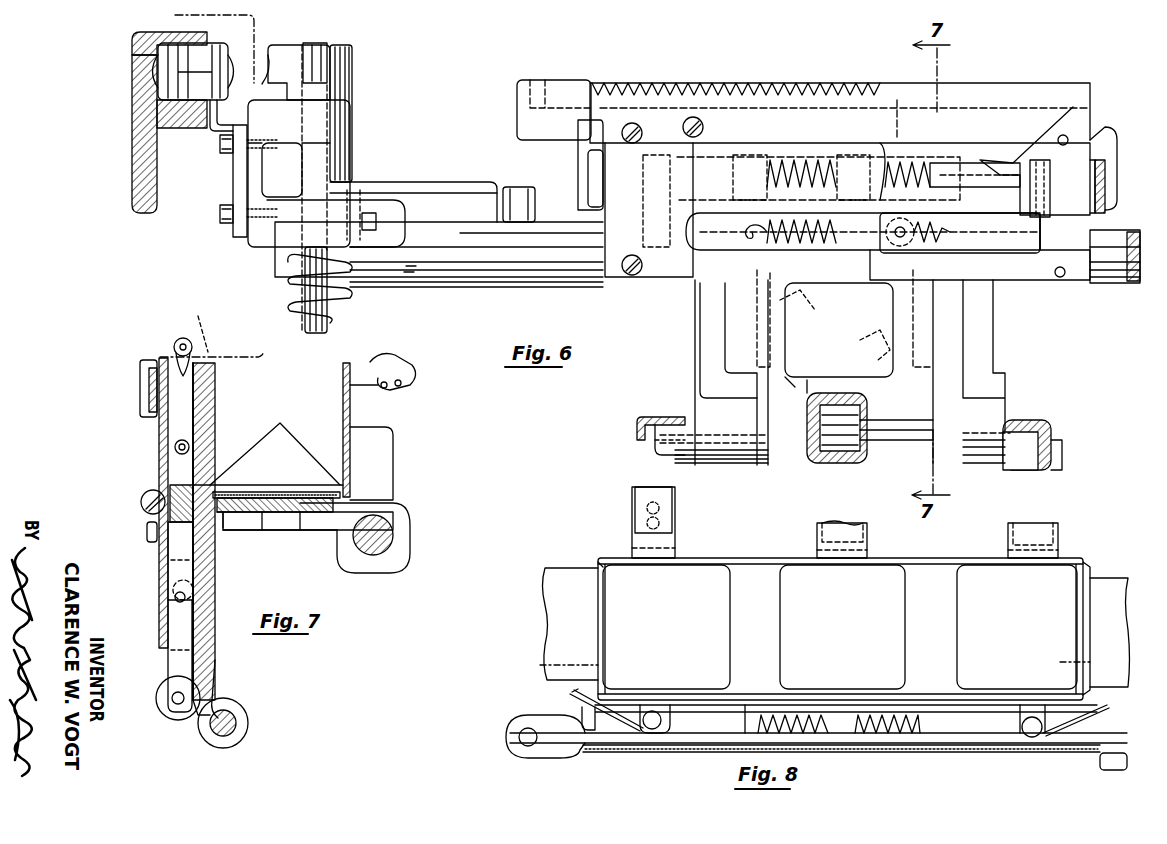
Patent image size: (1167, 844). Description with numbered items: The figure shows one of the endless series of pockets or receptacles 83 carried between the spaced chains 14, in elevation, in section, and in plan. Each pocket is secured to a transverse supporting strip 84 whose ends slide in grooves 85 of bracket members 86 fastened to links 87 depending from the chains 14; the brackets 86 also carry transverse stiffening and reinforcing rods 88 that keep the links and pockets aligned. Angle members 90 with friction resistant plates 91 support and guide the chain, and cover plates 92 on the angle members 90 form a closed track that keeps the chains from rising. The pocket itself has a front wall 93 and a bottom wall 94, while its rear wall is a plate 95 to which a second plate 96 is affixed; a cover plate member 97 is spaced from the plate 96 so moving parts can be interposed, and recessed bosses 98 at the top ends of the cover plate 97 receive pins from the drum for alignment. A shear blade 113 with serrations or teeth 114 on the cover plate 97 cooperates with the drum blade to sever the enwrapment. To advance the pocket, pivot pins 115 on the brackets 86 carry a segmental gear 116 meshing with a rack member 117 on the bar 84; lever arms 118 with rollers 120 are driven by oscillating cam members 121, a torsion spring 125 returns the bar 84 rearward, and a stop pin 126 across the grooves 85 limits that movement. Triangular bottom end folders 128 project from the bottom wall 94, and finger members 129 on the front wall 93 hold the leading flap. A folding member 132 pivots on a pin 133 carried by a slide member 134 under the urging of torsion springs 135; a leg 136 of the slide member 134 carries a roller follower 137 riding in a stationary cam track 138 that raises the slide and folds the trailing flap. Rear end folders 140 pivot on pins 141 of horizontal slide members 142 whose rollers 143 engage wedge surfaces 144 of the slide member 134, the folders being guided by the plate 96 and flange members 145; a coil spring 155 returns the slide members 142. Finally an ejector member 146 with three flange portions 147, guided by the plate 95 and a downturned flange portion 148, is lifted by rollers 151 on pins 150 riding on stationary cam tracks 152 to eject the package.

In FIG. 6, the chains 14 is at (182, 45).
In FIG. 7, the pockets or receptacles 83 is at (316, 385).
In FIG. 8, the pockets or receptacles 83 is at (730, 606).
In FIG. 6, the transverse supporting strips 84 is at (468, 200).
In FIG. 7, the transverse supporting strips 84 is at (297, 532).
In FIG. 8, the transverse supporting strips 84 is at (563, 617).
In FIG. 6, the grooves 85 is at (338, 252).
In FIG. 7, the grooves 85 is at (395, 505).
In FIG. 6, the bracket members 86 is at (345, 115).
In FIG. 7, the bracket members 86 is at (385, 455).
In FIG. 6, the links 87 is at (230, 182).
In FIG. 6, the transverse stiffening and reinforcing rods 88 is at (576, 270).
In FIG. 7, the transverse stiffening and reinforcing rods 88 is at (388, 552).
In FIG. 6, the angle members 90 is at (130, 167).
In FIG. 6, the friction resistant plates 91 is at (133, 105).
In FIG. 6, the cover plates 92 is at (132, 38).
In FIG. 7, the front wall 93 is at (352, 420).
In FIG. 8, the front wall 93 is at (712, 562).
In FIG. 7, the bottom wall 94 is at (262, 532).
In FIG. 8, the bottom wall 94 is at (768, 590).
In FIG. 7, the plate 95 is at (216, 412).
In FIG. 8, the plate 95 is at (810, 700).
In FIG. 6, the second plate 96 is at (1076, 100).
In FIG. 7, the second plate 96 is at (216, 378).
In FIG. 8, the second plate 96 is at (865, 700).
In FIG. 6, the cover plate member 97 is at (710, 150).
In FIG. 7, the cover plate member 97 is at (173, 352).
In FIG. 8, the cover plate member 97 is at (663, 745).
In FIG. 6, the recessed bosses 98 is at (518, 88).
In FIG. 7, the recessed bosses 98 is at (455, 724).
In FIG. 8, the recessed bosses 98 is at (508, 727).
In FIG. 6, the shear blade 113 is at (805, 95).
In FIG. 7, the shear blade 113 is at (140, 385).
In FIG. 8, the shear blade 113 is at (895, 745).
In FIG. 6, the serrations or teeth 114 is at (610, 90).
In FIG. 7, the serrations or teeth 114 is at (140, 365).
In FIG. 8, the serrations or teeth 114 is at (990, 762).
In FIG. 6, the pivot pins 115 is at (332, 48).
In FIG. 6, the segmental gear 116 is at (485, 185).
In FIG. 6, the rack member 117 is at (522, 188).
In FIG. 6, the lever arms 118 is at (284, 45).
In FIG. 6, the rollers 120 is at (322, 66).
In FIG. 6, the oscillating cam members 121 is at (280, 22).
In FIG. 6, the torsion spring 125 is at (288, 277).
In FIG. 6, the stop pin 126 is at (426, 270).
In FIG. 6, the bottom end folders 128 is at (1074, 186).
In FIG. 7, the bottom end folders 128 is at (284, 428).
In FIG. 8, the bottom end folders 128 is at (595, 580).
In FIG. 7, the finger members 129 is at (412, 358).
In FIG. 8, the finger members 129 is at (632, 512).
In FIG. 6, the folding member 132 is at (897, 100).
In FIG. 7, the folding member 132 is at (184, 338).
In FIG. 8, the folding member 132 is at (1018, 760).
In FIG. 6, the pin 133 is at (983, 175).
In FIG. 7, the pin 133 is at (174, 447).
In FIG. 8, the pin 133 is at (752, 705).
In FIG. 6, the slide member 134 is at (755, 165).
In FIG. 7, the slide member 134 is at (162, 638).
In FIG. 8, the slide member 134 is at (848, 735).
In FIG. 6, the torsion springs 135 is at (790, 160).
In FIG. 8, the torsion springs 135 is at (915, 740).
In FIG. 6, the leg 136 is at (886, 453).
In FIG. 7, the leg 136 is at (172, 668).
In FIG. 6, the roller follower 137 is at (855, 465).
In FIG. 7, the roller follower 137 is at (157, 712).
In FIG. 6, the cam track 138 is at (812, 462).
In FIG. 6, the rear end folders 140 is at (578, 148).
In FIG. 8, the rear end folders 140 is at (570, 708).
In FIG. 6, the pins 141 is at (650, 192).
In FIG. 8, the pins 141 is at (650, 730).
In FIG. 6, the slide members 142 is at (1008, 252).
In FIG. 7, the slide members 142 is at (146, 531).
In FIG. 8, the slide members 142 is at (672, 710).
In FIG. 6, the rollers 143 is at (900, 250).
In FIG. 7, the rollers 143 is at (160, 470).
In FIG. 6, the wedge surfaces 144 is at (836, 325).
In FIG. 7, the wedge surfaces 144 is at (178, 556).
In FIG. 6, the flange members 145 is at (590, 162).
In FIG. 8, the flange members 145 is at (585, 712).
In FIG. 6, the member 146 is at (700, 408).
In FIG. 7, the member 146 is at (216, 692).
In FIG. 7, the flange portions 147 is at (256, 487).
In FIG. 8, the flange portions 147 is at (659, 656).
In FIG. 7, the downturned flange portion 148 is at (225, 540).
In FIG. 6, the pins 150 is at (732, 466).
In FIG. 7, the pins 150 is at (212, 740).
In FIG. 6, the rollers 151 is at (675, 420).
In FIG. 7, the rollers 151 is at (246, 742).
In FIG. 6, the cam tracks 152 is at (637, 432).
In FIG. 6, the coil spring 155 is at (766, 242).
In FIG. 7, the coil spring 155 is at (141, 503).